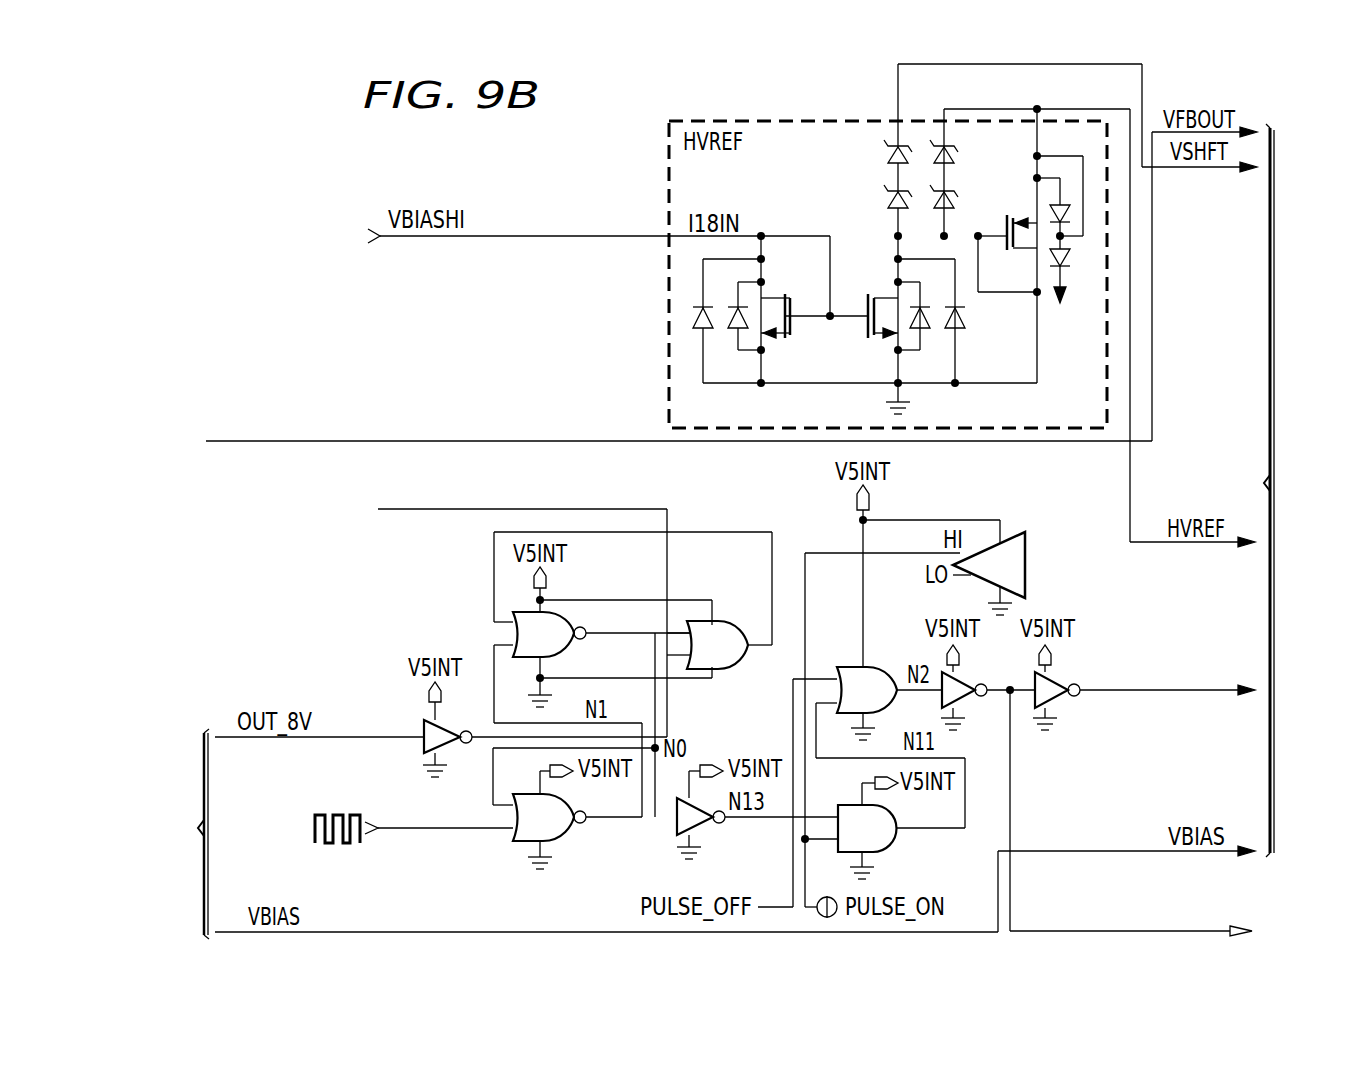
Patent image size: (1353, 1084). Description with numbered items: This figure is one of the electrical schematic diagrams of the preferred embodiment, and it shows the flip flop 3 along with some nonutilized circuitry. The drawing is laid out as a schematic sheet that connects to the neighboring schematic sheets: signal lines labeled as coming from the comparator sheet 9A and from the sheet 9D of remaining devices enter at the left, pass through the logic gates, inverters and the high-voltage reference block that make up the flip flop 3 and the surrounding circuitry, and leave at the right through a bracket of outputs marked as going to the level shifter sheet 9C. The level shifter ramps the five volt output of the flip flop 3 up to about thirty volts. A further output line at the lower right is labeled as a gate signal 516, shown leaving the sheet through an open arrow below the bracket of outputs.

The flip flop 3 is at (574, 426).
The GATE_516 gate drive output signal 516 is at (1163, 824).
The connection bracket from FIG. 9A is at (176, 834).
The connection bracket to FIG. 9C is at (1292, 490).
The N3 input line from FIG. 9D is at (481, 609).